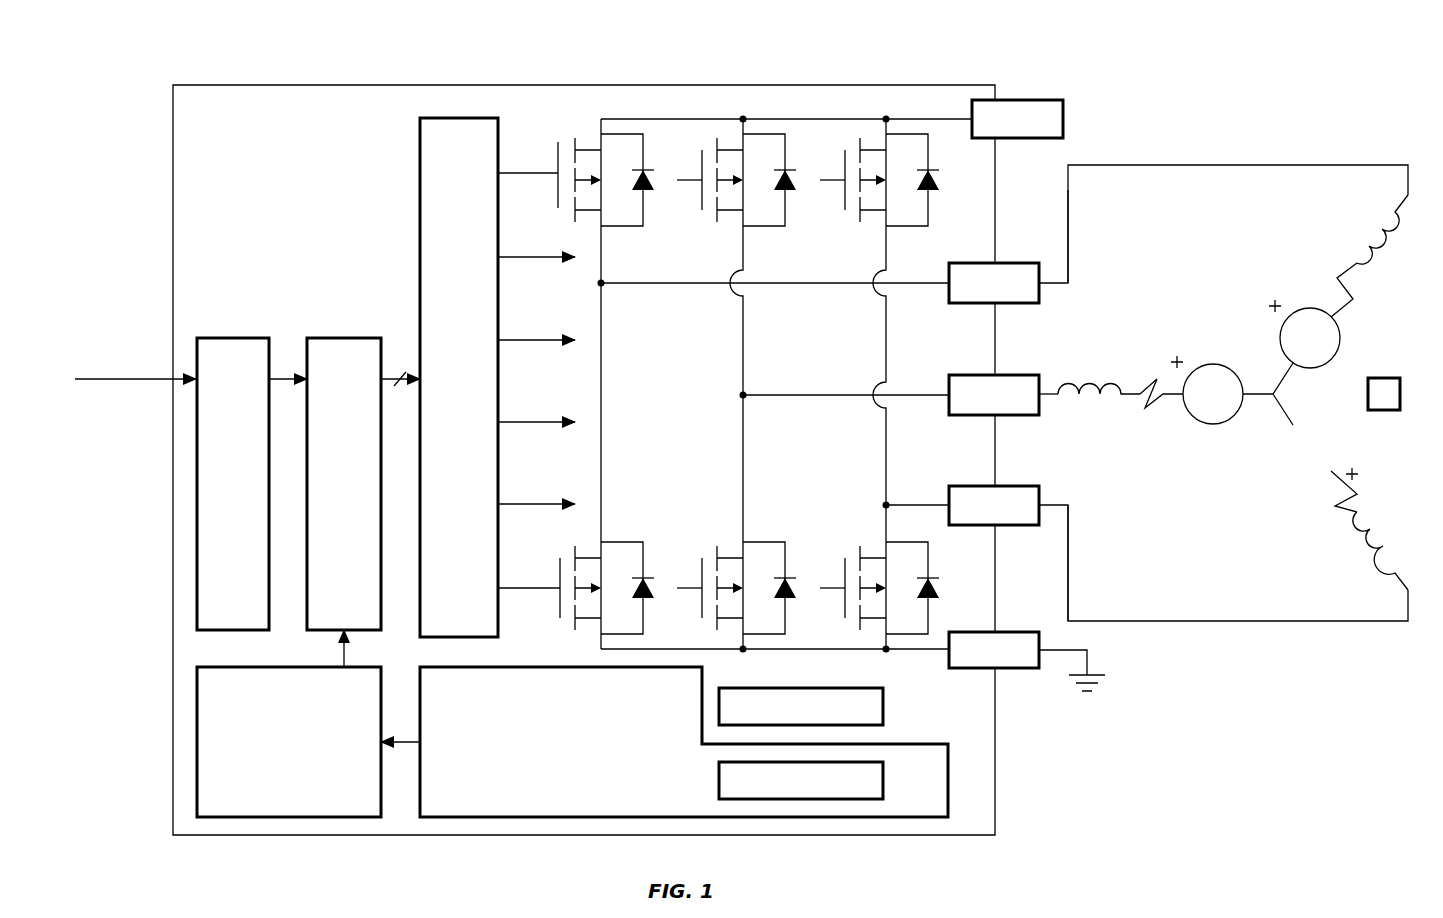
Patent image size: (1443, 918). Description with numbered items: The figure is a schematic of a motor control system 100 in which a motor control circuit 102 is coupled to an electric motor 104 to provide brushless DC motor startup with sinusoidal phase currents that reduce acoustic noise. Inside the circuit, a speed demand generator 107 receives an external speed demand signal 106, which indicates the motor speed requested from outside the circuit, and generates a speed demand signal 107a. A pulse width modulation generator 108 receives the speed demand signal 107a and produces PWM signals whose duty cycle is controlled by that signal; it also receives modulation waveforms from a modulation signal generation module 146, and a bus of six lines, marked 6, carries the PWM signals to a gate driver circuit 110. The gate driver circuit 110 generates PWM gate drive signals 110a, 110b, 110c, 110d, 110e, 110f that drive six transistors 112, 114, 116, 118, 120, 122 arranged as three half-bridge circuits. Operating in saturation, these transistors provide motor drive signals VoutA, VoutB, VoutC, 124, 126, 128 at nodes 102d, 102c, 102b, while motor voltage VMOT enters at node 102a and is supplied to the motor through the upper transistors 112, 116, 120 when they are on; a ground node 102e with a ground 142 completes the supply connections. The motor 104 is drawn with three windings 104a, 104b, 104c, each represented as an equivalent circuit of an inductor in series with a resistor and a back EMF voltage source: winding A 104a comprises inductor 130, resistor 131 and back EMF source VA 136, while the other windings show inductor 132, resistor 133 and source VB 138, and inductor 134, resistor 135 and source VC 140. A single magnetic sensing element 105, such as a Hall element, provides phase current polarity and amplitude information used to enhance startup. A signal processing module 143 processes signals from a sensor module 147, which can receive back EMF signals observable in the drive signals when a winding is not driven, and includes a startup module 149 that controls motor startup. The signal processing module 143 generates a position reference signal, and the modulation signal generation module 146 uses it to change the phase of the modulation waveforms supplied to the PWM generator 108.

The motor control system 100 is at (1122, 42).
The motor control circuit 102 is at (230, 123).
The node 102a is at (1063, 119).
The node 102b is at (1008, 263).
The node 102c is at (990, 375).
The node 102d is at (990, 486).
The GND pin 102e is at (1030, 632).
The electric motor 104 is at (1282, 138).
The winding A 104a is at (1278, 538).
The winding 104b is at (1168, 350).
The winding 104c is at (1303, 237).
The magnetic sensing element 105 is at (1366, 396).
The external speed demand signal 106 is at (128, 385).
The speed demand generator 107 is at (233, 484).
The speed demand signal 107a is at (290, 375).
The pulse width modulation generator 108 is at (344, 484).
The six signal lines 6 is at (400, 365).
The gate driver circuit 110 is at (442, 382).
The PWM gate drive signal 110a is at (528, 172).
The PWM gate drive signal 110b is at (530, 256).
The PWM gate drive signal 110c is at (535, 339).
The PWM gate drive signal 110d is at (535, 421).
The PWM gate drive signal 110e is at (535, 503).
The PWM gate drive signal 110f is at (535, 587).
The transistor 112 is at (615, 227).
The transistor 114 is at (630, 542).
The transistor 116 is at (757, 227).
The transistor 118 is at (770, 542).
The transistor 120 is at (900, 227).
The transistor 122 is at (930, 543).
The motor drive signal VoutA 124 is at (1068, 565).
The motor drive signal VoutB 126 is at (1048, 398).
The motor drive signal VoutC 128 is at (1068, 200).
The inductor 130 is at (1382, 563).
The resistor 131 is at (1335, 500).
The motor winding 132 is at (1100, 384).
The winding resistance 133 is at (1150, 412).
The motor winding 134 is at (1397, 208).
The winding resistance 135 is at (1335, 279).
The back EMF voltage source VA 136 is at (1280, 450).
The back EMF voltage source VB 138 is at (1214, 364).
The back EMF voltage source VC 140 is at (1336, 321).
The ground 142 is at (1090, 658).
The signal processing module 143 is at (544, 797).
The modulation signal generation module 146 is at (272, 804).
The sensor module 147 is at (862, 718).
The startup module 149 is at (862, 792).